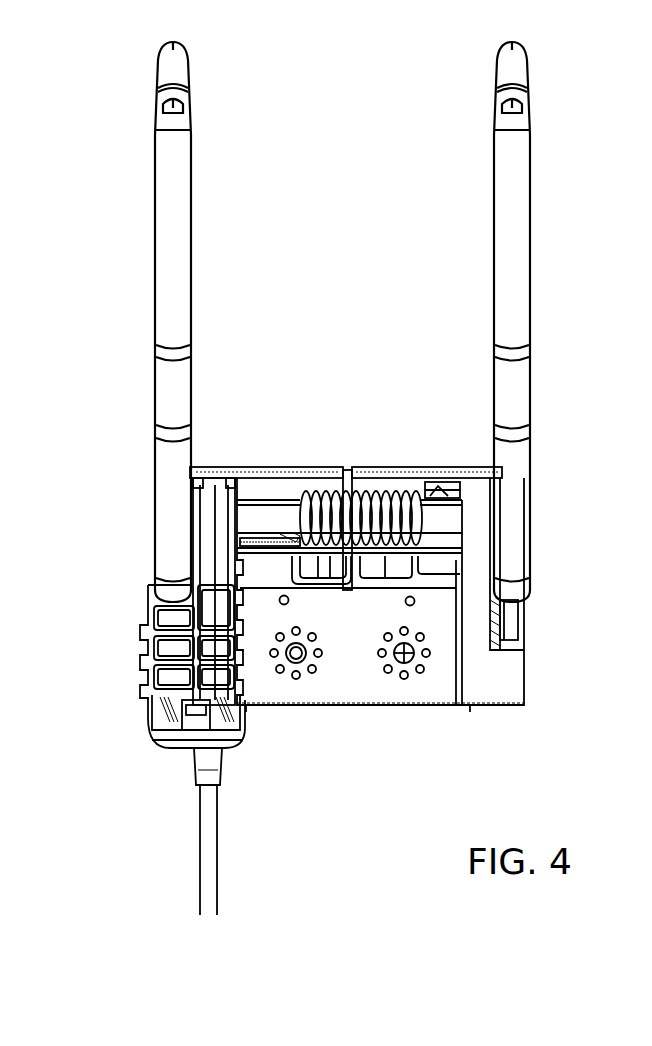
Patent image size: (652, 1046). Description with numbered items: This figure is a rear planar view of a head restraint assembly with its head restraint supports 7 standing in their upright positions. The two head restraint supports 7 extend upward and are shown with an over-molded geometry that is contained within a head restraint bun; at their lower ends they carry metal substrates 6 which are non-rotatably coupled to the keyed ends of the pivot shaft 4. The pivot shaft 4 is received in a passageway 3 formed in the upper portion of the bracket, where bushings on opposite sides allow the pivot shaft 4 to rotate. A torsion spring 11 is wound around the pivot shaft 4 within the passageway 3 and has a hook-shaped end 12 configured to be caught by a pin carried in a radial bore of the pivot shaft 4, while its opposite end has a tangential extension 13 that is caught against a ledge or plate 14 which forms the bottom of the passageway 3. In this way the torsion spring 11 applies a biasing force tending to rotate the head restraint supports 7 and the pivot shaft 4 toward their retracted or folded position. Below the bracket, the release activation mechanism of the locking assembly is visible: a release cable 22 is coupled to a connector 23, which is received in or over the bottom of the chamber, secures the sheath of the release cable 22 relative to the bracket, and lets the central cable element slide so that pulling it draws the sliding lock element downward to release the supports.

The passageway 3 is at (288, 493).
The pivot shaft 4 is at (257, 512).
The metal substrate 6 is at (520, 616).
The head restraint support 7 is at (214, 253).
The torsion spring 11 is at (374, 495).
The hook-shaped end 12 is at (437, 495).
The tangential extension 13 is at (314, 565).
The ledge or plate 14 is at (262, 550).
The release cable 22 is at (205, 848).
The connector 23 is at (152, 748).